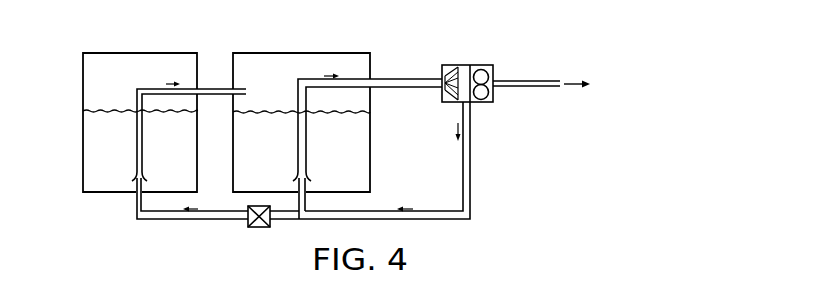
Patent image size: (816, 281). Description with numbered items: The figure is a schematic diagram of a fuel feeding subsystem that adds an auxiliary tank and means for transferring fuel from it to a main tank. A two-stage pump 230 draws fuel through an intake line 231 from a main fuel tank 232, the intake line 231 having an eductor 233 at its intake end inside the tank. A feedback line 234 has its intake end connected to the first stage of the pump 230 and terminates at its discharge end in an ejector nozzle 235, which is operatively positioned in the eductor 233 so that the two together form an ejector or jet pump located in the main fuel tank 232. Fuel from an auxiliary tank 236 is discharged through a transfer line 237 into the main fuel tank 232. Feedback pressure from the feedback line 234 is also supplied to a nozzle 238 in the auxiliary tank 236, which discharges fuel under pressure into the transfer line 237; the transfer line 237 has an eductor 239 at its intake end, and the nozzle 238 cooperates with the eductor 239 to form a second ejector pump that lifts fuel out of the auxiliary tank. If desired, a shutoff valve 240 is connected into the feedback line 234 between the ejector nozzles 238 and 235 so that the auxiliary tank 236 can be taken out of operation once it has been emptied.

The two-stage pump 230 is at (475, 60).
The intake line 231 is at (387, 78).
The main fuel tank 232 is at (357, 139).
The eductor 233 is at (308, 178).
The feedback line 234 is at (471, 150).
The ejector nozzle 235 is at (308, 188).
The auxiliary tank 236 is at (97, 142).
The transfer line 237 is at (212, 88).
The nozzle 238 is at (137, 185).
The eductor 239 is at (133, 180).
The shutoff valve 240 is at (250, 228).